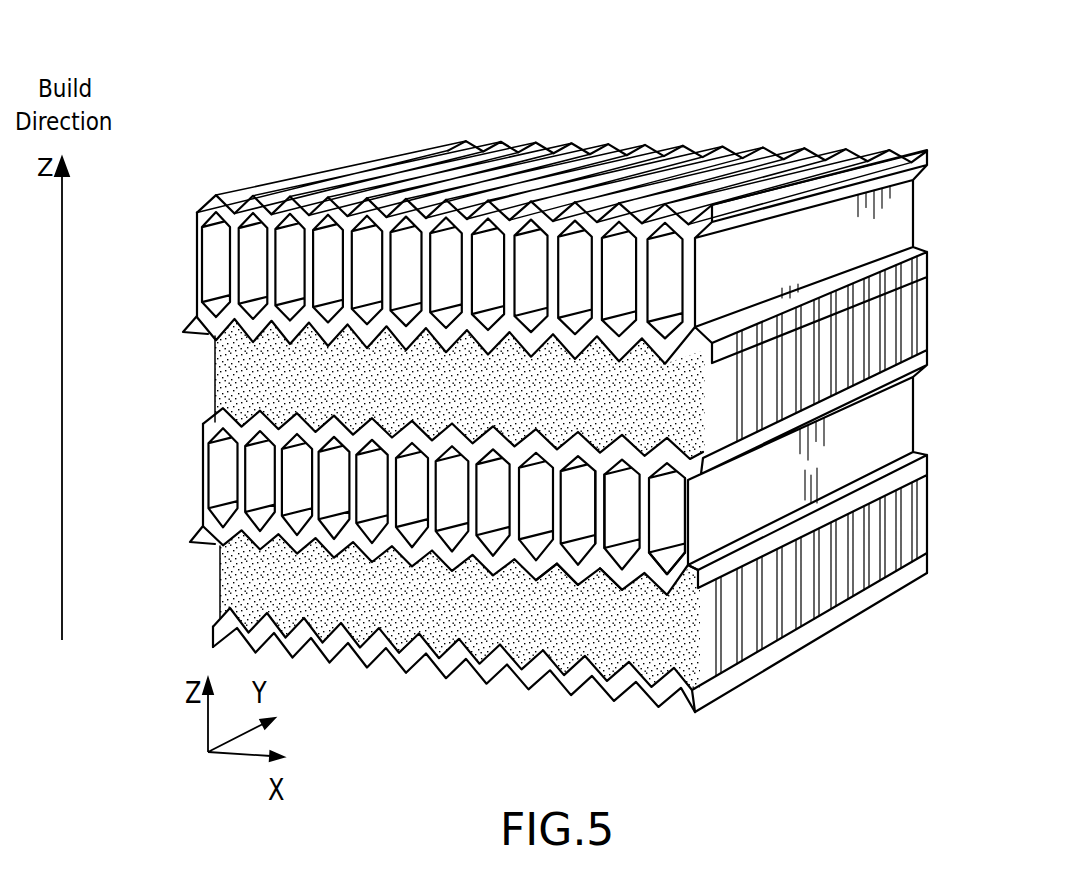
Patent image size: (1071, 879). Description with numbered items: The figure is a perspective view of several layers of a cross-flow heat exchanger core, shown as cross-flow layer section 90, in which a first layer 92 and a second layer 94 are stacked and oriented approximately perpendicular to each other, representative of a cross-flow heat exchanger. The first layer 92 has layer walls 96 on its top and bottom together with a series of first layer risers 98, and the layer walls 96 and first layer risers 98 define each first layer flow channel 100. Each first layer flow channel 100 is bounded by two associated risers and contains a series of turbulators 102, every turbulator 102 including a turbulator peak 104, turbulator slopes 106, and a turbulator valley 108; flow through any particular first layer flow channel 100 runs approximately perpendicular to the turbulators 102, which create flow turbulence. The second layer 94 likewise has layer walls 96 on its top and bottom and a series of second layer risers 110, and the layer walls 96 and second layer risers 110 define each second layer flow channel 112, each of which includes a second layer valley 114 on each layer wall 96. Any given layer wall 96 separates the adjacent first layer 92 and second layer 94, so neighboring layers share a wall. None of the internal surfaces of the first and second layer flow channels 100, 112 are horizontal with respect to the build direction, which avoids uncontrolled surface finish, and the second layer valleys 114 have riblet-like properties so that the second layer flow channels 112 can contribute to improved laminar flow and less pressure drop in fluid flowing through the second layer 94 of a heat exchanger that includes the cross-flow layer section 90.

The cross-flow layer section 90 is at (289, 125).
The first layer 92 is at (193, 375).
The second layer 94 is at (193, 477).
The layer wall 96 is at (183, 322).
The first layer riser 98 is at (727, 392).
The first layer flow channel 100 is at (770, 372).
The turbulator 102 is at (613, 428).
The turbulator peak 104 is at (575, 578).
The turbulator slope 106 is at (545, 600).
The turbulator valley 108 is at (608, 575).
The second layer riser 110 is at (688, 515).
The second layer flow channel 112 is at (667, 520).
The second layer valley 114 is at (622, 585).